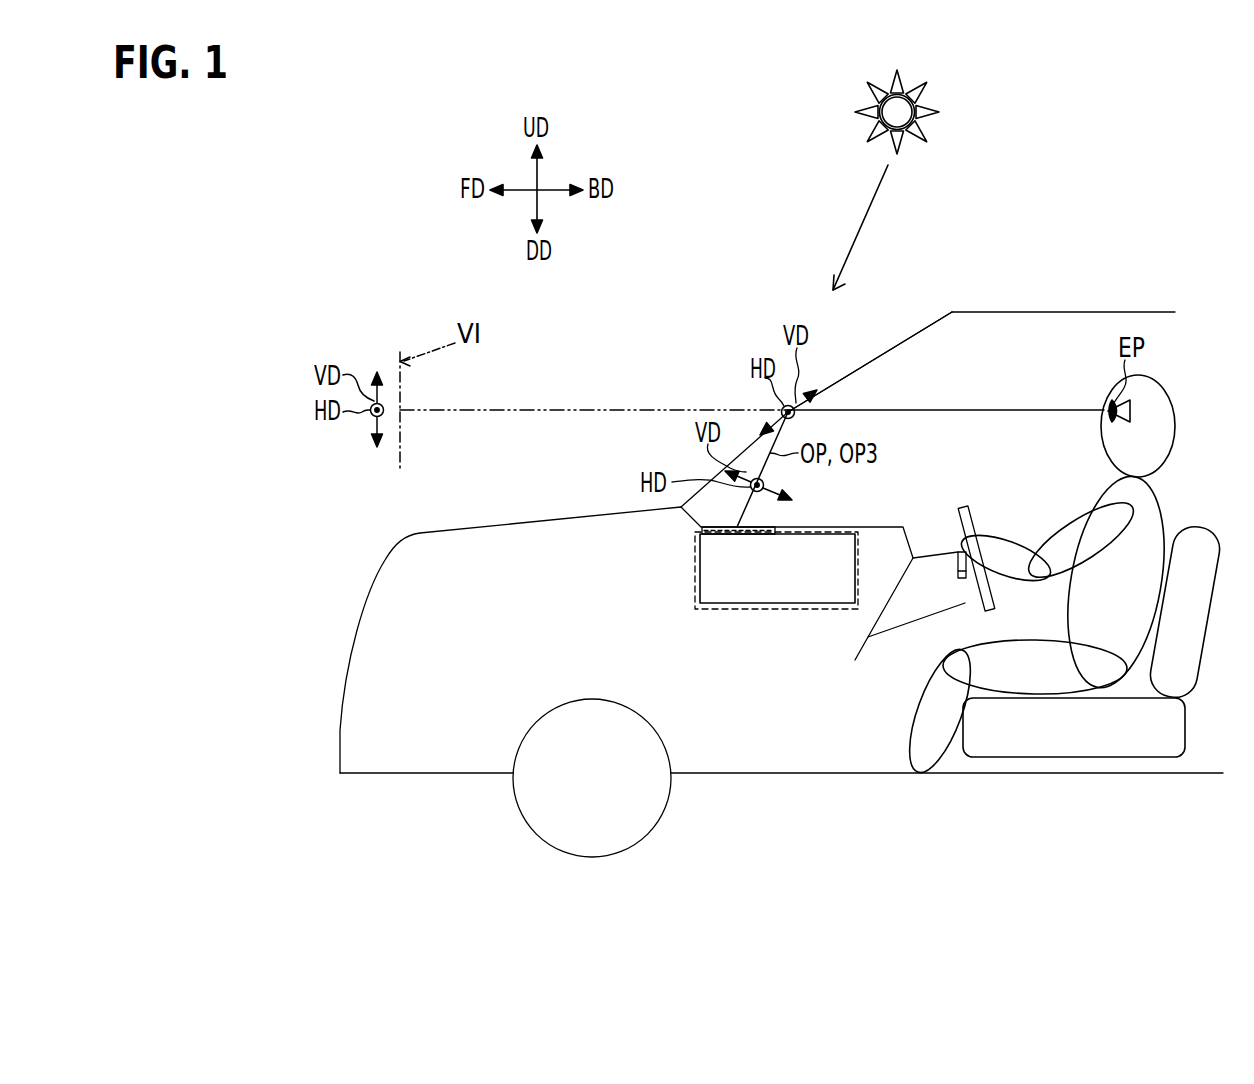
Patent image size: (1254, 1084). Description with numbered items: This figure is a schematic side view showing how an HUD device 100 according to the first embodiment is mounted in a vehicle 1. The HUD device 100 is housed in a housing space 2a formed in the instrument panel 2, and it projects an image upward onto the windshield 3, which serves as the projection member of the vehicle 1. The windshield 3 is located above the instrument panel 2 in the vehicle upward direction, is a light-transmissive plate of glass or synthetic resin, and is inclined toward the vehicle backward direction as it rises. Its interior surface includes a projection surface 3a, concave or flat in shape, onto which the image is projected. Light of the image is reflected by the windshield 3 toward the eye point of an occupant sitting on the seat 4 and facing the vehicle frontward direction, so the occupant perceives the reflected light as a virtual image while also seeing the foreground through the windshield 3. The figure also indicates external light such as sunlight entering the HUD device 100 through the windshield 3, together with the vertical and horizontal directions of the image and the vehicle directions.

The vehicle 1 is at (1137, 311).
The instrument panel 2 is at (872, 527).
The housing space 2a is at (695, 553).
The windshield 3 is at (840, 372).
The projection surface 3a is at (857, 368).
The seat 4 is at (1193, 524).
The HUD device 100 is at (740, 606).